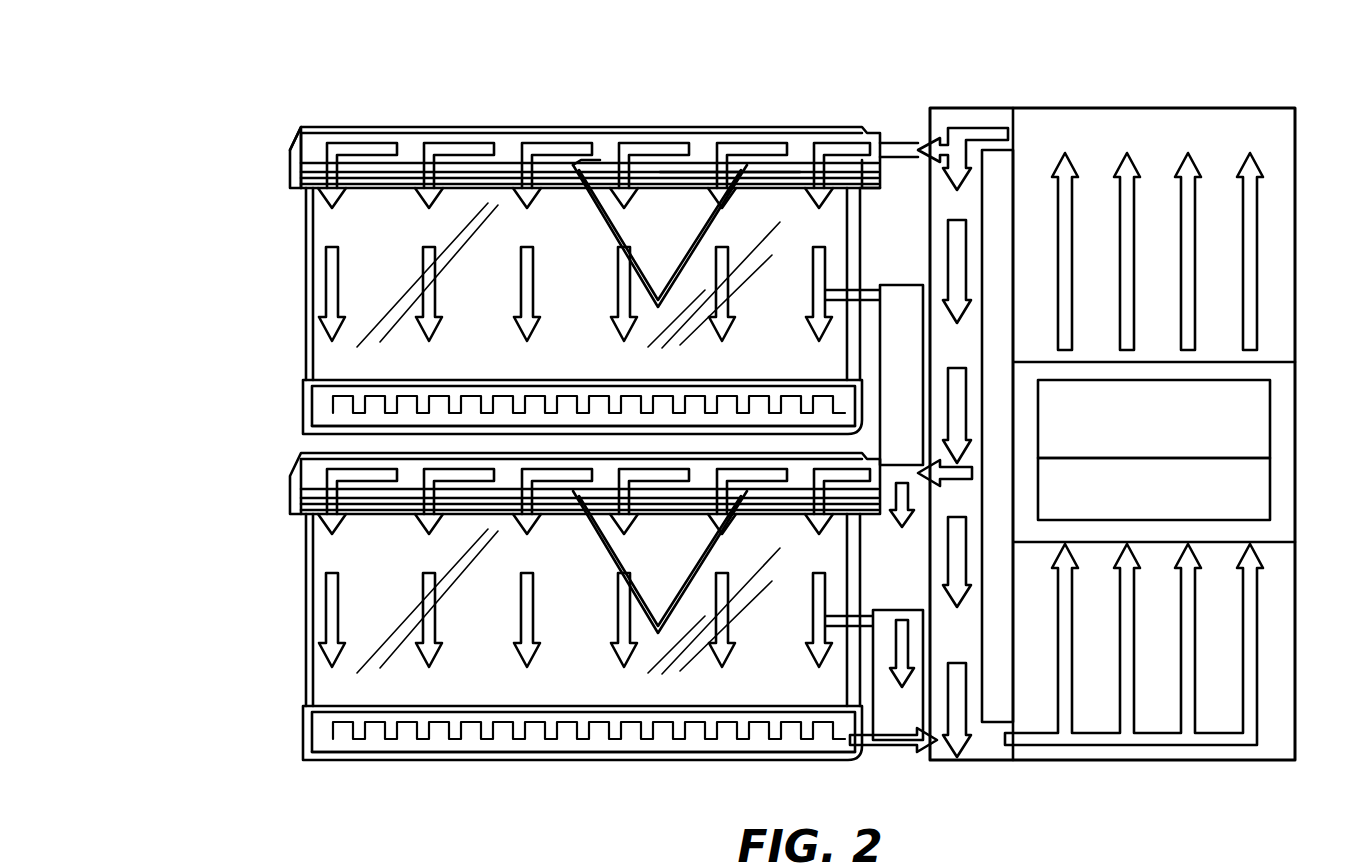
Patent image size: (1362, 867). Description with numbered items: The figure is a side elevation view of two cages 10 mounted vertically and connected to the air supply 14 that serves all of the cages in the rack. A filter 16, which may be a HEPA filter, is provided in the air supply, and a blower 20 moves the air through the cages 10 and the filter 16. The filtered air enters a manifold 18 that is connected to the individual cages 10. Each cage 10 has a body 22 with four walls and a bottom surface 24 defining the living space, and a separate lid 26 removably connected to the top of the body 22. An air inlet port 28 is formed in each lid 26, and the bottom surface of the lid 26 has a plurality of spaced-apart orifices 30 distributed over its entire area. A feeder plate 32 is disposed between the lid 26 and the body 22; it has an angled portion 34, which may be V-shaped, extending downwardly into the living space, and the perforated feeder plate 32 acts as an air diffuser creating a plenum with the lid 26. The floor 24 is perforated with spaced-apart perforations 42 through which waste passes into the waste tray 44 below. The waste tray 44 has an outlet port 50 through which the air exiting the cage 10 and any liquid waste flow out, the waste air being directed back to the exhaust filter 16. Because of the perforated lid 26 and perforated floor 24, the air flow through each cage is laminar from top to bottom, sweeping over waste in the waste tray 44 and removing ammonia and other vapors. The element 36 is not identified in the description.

The cage 10 is at (268, 292).
The air supply 14 is at (1267, 697).
The filter 16 is at (1262, 500).
The manifold 18 is at (905, 135).
The blower 20 is at (1255, 432).
The body 22 is at (307, 245).
The bottom surface 24 is at (320, 410).
The lid 26 is at (518, 125).
The air inlet port 28 is at (866, 165).
The orifices 30 is at (445, 165).
The feeder plate 32 is at (300, 150).
The angled portion 34 is at (640, 262).
The diffuser panel 36 is at (680, 170).
The perforations 42 is at (375, 395).
The waste tray 44 is at (345, 405).
The outlet port 50 is at (840, 748).